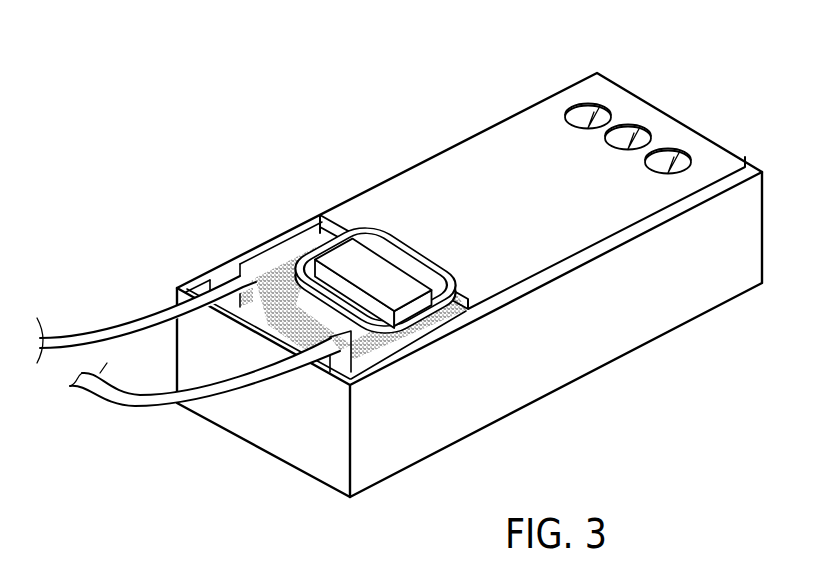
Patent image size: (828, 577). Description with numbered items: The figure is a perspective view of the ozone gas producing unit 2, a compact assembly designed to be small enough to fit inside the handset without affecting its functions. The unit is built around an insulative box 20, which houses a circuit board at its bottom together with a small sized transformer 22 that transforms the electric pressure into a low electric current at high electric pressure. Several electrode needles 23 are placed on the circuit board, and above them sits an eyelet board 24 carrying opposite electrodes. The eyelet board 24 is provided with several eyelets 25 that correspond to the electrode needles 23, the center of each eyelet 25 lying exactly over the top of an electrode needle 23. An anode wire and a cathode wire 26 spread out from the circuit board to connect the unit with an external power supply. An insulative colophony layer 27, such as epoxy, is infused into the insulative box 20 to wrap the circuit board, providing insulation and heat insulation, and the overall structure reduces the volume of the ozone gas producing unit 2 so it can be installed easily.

The ozone gas producing unit 2 is at (399, 260).
The insulative box 20 is at (627, 323).
The small sized transformer 22 is at (268, 305).
The electrode needles 23 is at (600, 118).
The eyelet board 24 is at (476, 176).
The eyelets 25 is at (572, 121).
The anode wire and cathode wire 26 is at (162, 398).
The insulative colophony layer 27 is at (258, 266).